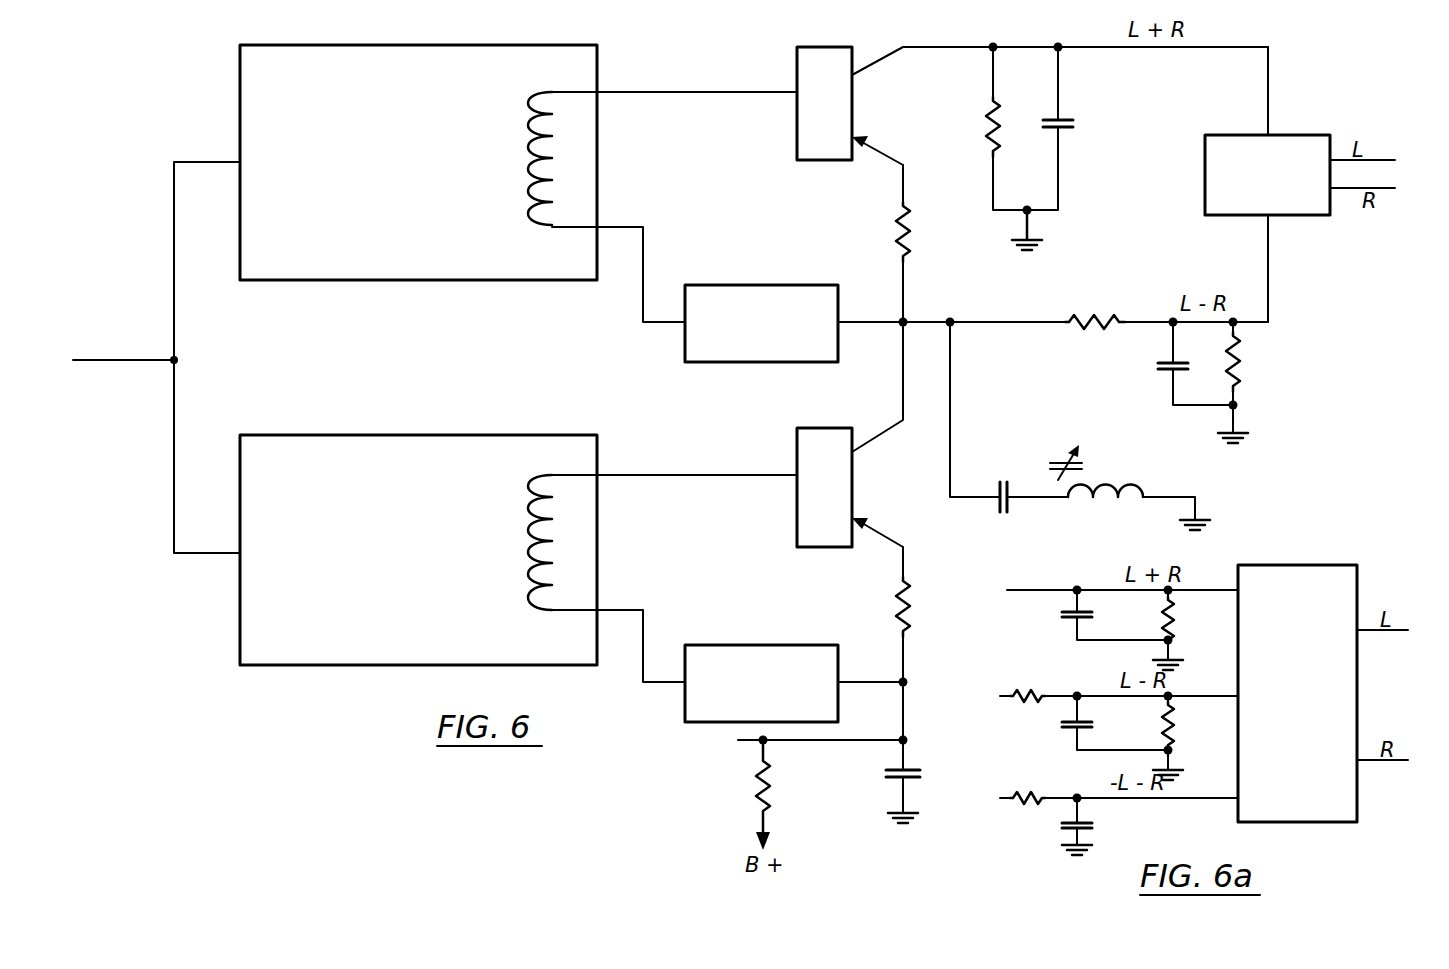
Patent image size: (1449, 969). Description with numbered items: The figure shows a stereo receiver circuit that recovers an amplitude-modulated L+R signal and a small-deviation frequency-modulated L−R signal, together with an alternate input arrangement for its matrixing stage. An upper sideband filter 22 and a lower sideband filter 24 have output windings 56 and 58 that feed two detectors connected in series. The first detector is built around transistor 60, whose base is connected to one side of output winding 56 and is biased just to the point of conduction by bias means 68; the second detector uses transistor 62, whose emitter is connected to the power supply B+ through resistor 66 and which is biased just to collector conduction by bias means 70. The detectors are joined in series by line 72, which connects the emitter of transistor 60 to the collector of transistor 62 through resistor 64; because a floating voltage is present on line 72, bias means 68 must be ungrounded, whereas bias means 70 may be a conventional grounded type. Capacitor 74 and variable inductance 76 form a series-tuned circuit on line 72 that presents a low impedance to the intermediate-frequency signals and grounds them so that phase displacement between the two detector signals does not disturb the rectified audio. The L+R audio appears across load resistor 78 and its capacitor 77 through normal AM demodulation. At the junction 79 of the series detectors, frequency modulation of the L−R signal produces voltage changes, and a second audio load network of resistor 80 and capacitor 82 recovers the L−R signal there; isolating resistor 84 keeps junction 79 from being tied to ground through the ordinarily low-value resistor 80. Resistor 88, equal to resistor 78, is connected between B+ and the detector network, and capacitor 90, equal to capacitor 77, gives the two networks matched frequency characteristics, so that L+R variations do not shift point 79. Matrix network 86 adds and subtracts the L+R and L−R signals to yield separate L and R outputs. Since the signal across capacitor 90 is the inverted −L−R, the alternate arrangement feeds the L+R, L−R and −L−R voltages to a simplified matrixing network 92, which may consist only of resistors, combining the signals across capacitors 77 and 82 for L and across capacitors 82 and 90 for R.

In FIG. 6, the upper sideband filter 22 is at (390, 280).
In FIG. 6, the lower sideband filter 24 is at (400, 435).
In FIG. 6, the output winding 56 is at (527, 200).
In FIG. 6, the output winding 58 is at (527, 580).
In FIG. 6, the transistor 60 is at (797, 72).
In FIG. 6, the transistor 62 is at (797, 455).
In FIG. 6, the resistor 64 is at (900, 235).
In FIG. 6, the resistor 66 is at (900, 605).
In FIG. 6, the bias means 68 is at (740, 285).
In FIG. 6, the bias means 70 is at (757, 645).
In FIG. 6, the line 72 is at (903, 398).
In FIG. 6, the capacitor 74 is at (995, 485).
In FIG. 6, the variable inductance 76 is at (1112, 478).
In FIG. 6, the capacitor 77 is at (1068, 115).
In FIG. 6A, the capacitor 77 is at (1068, 618).
In FIG. 6, the load resistor 78 is at (985, 135).
In FIG. 6A, the load resistor 78 is at (1175, 610).
In FIG. 6, the junction 79 is at (905, 320).
In FIG. 6, the load resistor 80 is at (1243, 365).
In FIG. 6A, the load resistor 80 is at (1176, 722).
In FIG. 6, the capacitor 82 is at (1162, 372).
In FIG. 6A, the capacitor 82 is at (1068, 718).
In FIG. 6, the isolating resistor 84 is at (1100, 315).
In FIG. 6A, the isolating resistor 84 is at (1035, 688).
In FIG. 6, the matrix network 86 is at (1295, 135).
In FIG. 6, the resistor 88 is at (760, 782).
In FIG. 6A, the resistor 88 is at (1040, 795).
In FIG. 6, the capacitor 90 is at (890, 770).
In FIG. 6A, the capacitor 90 is at (1065, 838).
In FIG. 6A, the simplified matrixing network 92 is at (1296, 565).